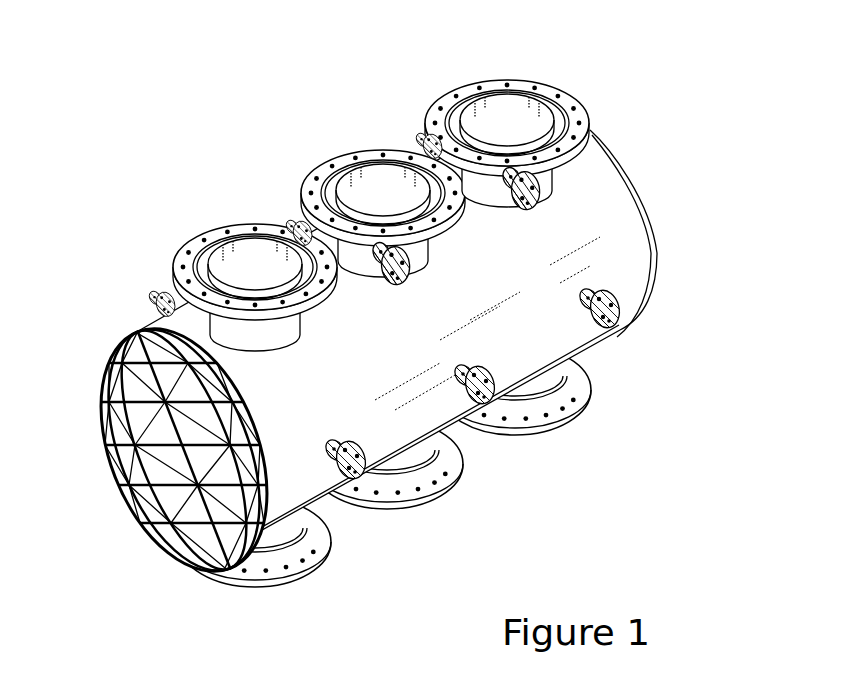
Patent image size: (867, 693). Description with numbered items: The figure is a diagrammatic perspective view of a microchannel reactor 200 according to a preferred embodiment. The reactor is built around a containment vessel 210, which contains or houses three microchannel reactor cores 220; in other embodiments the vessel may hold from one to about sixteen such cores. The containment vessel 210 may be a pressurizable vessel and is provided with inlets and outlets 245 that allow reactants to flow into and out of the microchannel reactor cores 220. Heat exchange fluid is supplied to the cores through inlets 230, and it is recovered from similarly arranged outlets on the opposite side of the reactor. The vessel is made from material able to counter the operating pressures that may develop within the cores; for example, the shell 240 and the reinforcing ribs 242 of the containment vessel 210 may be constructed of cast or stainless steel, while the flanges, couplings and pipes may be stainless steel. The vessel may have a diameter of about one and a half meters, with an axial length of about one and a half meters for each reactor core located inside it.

The microchannel reactor 200 is at (399, 94).
The containment vessel 210 is at (610, 145).
The microchannel reactor cores 220 is at (248, 277).
The inlets 230 is at (360, 467).
The shell 240 is at (620, 228).
The reinforcing ribs 242 is at (128, 375).
The inlets and outlets 245 is at (327, 550).